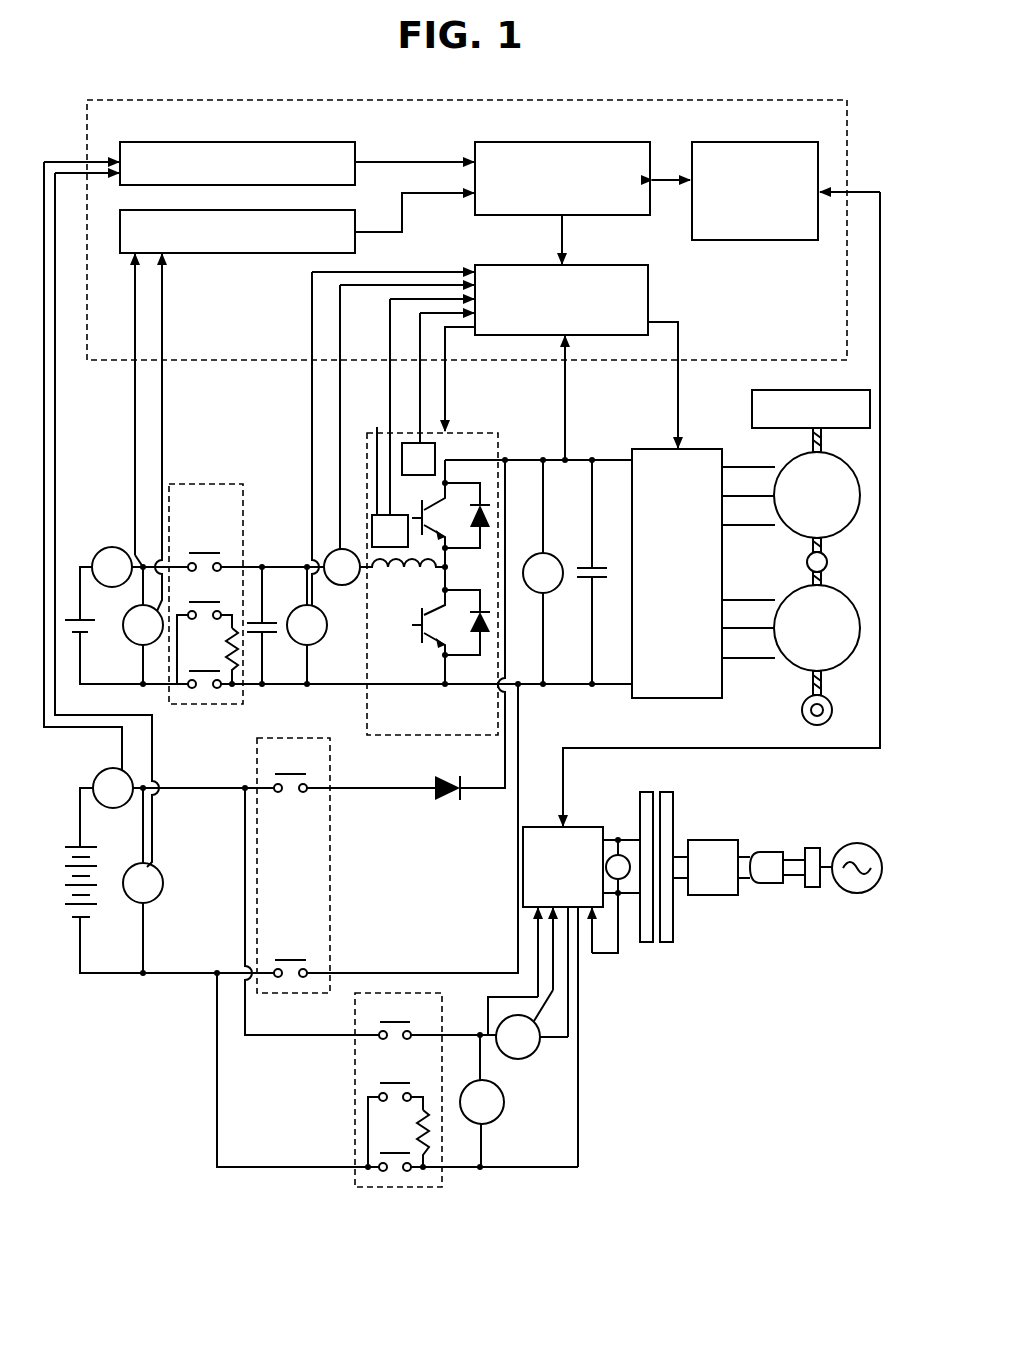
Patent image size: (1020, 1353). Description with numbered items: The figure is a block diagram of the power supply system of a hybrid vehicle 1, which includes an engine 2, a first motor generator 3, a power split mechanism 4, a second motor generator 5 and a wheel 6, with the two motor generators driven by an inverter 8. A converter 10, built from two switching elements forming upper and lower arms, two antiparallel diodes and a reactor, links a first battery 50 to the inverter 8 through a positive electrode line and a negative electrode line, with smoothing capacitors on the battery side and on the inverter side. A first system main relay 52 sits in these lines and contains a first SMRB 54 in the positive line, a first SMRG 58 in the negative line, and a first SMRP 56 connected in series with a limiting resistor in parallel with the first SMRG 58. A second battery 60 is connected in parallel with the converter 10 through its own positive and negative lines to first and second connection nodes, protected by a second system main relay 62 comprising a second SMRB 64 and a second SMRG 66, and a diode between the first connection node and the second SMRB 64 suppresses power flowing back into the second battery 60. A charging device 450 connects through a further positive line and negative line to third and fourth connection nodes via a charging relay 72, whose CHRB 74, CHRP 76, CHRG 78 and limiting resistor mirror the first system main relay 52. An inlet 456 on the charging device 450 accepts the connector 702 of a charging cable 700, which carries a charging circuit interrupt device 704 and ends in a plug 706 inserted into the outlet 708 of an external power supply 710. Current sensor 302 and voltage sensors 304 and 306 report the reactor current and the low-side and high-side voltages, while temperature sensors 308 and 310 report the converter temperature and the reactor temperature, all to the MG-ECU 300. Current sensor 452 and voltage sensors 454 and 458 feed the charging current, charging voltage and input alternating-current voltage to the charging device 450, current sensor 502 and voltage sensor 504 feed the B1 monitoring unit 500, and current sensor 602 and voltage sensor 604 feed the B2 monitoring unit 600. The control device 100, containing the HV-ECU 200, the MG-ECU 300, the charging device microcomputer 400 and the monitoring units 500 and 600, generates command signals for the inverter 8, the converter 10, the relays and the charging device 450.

The vehicle 1 is at (180, 92).
The engine 2 is at (838, 390).
The first motor generator 3 is at (795, 540).
The power split mechanism 4 is at (829, 562).
The second motor generator 5 is at (795, 673).
The wheel 6 is at (834, 710).
The inverter 8 is at (708, 449).
The converter 10 is at (464, 434).
The first battery 50 is at (75, 645).
The first system main relay 52 is at (196, 484).
The first SMRB 54 is at (198, 552).
The first SMRP 56 is at (196, 600).
The first SMRG 58 is at (203, 698).
The second battery 60 is at (68, 920).
The second system main relay 62 is at (287, 749).
The second SMRB 64 is at (290, 802).
The second SMRG 66 is at (298, 955).
The charging relay 72 is at (364, 1188).
The CHRB 74 is at (370, 1040).
The CHRP 76 is at (370, 1087).
The CHRG 78 is at (407, 1178).
The control device 100 is at (513, 100).
The HV-ECU 200 is at (592, 142).
The MG-ECU 300 is at (592, 265).
The current sensor 302 is at (348, 586).
The voltage sensor 304 is at (316, 644).
The voltage sensor 306 is at (532, 592).
The temperature sensor 308 is at (436, 452).
The temperature sensor 310 is at (364, 420).
The charging device microcomputer 400 is at (759, 142).
The charging device 450 is at (573, 827).
The current sensor 452 is at (527, 1058).
The voltage sensor 454 is at (498, 1120).
The inlet 456 is at (647, 945).
The voltage sensor 458 is at (622, 855).
The B1 monitoring unit 500 is at (279, 211).
The current sensor 502 is at (110, 547).
The voltage sensor 504 is at (128, 642).
The B2 monitoring unit 600 is at (279, 142).
The current sensor 602 is at (105, 768).
The voltage sensor 604 is at (155, 900).
The charging cable 700 is at (735, 915).
The connector 702 is at (668, 945).
The charging circuit interrupt device 704 is at (697, 840).
The plug 706 is at (768, 852).
The outlet 708 is at (815, 888).
The external power supply 710 is at (862, 894).